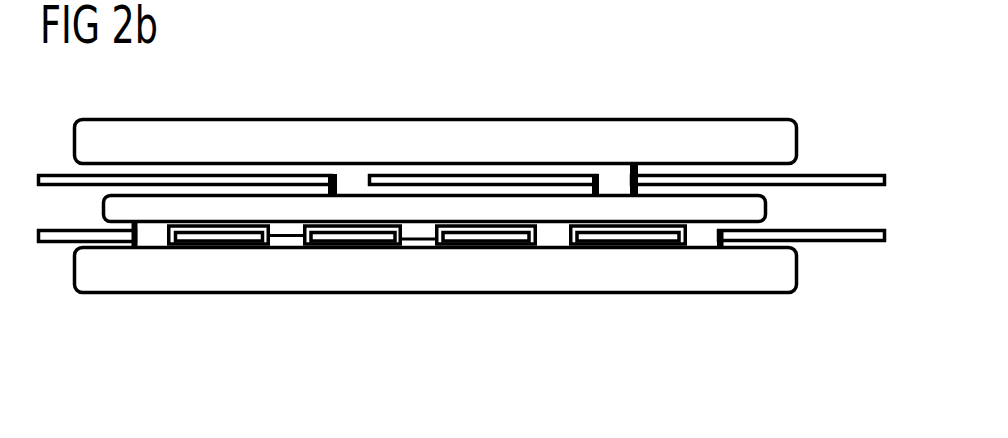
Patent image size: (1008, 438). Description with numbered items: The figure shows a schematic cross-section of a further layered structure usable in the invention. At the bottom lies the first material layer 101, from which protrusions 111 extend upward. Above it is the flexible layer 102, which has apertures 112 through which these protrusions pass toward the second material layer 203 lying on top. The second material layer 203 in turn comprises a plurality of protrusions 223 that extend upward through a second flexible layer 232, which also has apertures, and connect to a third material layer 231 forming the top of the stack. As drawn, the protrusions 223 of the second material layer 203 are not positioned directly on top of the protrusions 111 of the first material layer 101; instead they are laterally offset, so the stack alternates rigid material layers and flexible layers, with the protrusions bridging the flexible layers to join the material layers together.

The first material layer 101 is at (742, 277).
The flexible layer 102 is at (848, 243).
The protrusions of the first material layer 111 is at (159, 243).
The apertures of the flexible layer 112 is at (332, 173).
The second material layer 203 is at (757, 208).
The protrusions of the second material layer 223 is at (613, 180).
The third material layer 231 is at (708, 134).
The second flexible layer 232 is at (847, 174).